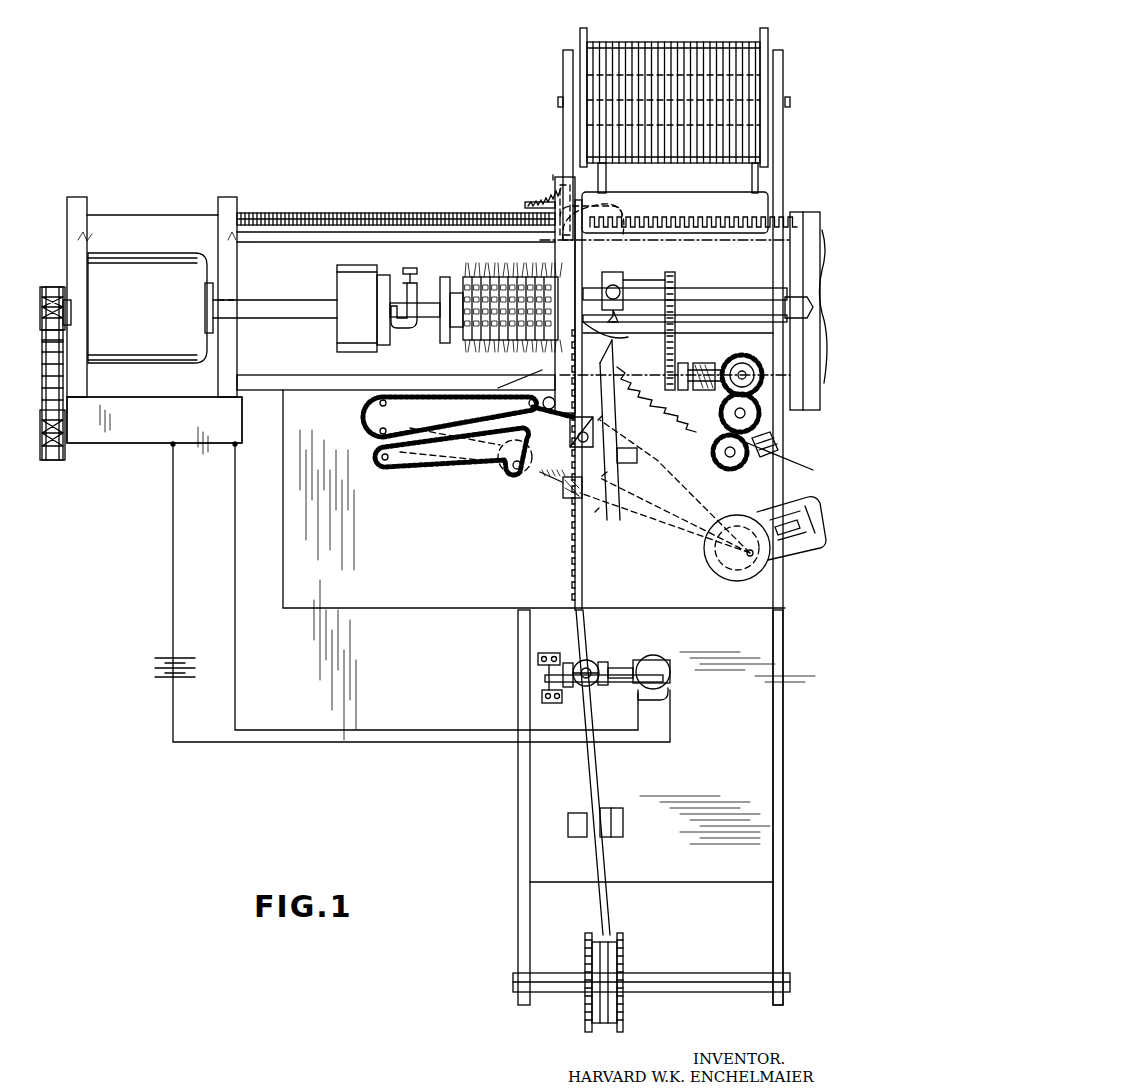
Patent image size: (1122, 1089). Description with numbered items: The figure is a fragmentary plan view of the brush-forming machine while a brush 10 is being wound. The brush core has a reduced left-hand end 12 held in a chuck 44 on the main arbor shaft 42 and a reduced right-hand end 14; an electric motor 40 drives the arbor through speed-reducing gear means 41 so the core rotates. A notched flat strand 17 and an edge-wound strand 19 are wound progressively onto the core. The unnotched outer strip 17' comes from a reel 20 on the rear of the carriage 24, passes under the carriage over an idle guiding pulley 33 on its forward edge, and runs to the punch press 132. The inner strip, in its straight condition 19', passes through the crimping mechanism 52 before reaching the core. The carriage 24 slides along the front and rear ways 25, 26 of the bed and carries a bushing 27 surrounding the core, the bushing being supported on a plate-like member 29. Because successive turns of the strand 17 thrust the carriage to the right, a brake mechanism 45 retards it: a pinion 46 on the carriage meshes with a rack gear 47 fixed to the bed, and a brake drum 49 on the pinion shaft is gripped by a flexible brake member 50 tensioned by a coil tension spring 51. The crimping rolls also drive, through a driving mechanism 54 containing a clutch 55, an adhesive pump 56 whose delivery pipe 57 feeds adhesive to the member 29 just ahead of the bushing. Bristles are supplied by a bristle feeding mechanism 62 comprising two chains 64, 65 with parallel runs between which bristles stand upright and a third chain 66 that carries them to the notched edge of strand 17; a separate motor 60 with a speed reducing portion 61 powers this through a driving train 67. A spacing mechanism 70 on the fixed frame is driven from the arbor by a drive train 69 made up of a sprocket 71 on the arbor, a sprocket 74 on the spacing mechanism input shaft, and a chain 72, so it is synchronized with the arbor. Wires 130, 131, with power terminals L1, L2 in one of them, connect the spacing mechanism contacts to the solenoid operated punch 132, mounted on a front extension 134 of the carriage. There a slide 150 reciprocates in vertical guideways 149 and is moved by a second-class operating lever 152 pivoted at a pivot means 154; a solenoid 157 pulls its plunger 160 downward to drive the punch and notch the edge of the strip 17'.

The reel 20 is at (638, 44).
The carriage 24 is at (688, 192).
The pinion 46 is at (698, 205).
The flexible brake member 50 is at (628, 206).
The brake drum 49 is at (608, 201).
The bushing 27 is at (572, 272).
The coil tension spring 51 is at (531, 181).
The brake mechanism 45 is at (548, 157).
The rear way 26 is at (382, 214).
The rack gear 47 is at (315, 216).
The front way 25 is at (269, 226).
The electric motor 40 is at (110, 362).
The speed-reducing gear means 41 is at (206, 355).
The main arbor shaft 42 is at (262, 320).
The chuck 44 is at (335, 343).
The reduced diameter left-hand end 12 is at (429, 287).
The brush 10 is at (487, 354).
The reduced diameter right-hand end 14 is at (790, 300).
The plate-like member 29 is at (618, 279).
The adhesive pump 56 is at (645, 270).
The driving mechanism 54 is at (682, 275).
The delivery pipe 57 is at (606, 332).
The clutch 55 is at (708, 365).
The edge-wound strand 19 is at (688, 410).
The crimping means 52 is at (755, 465).
The straight inner strip 19' is at (787, 450).
The driving train 67 is at (628, 428).
The first flat strand 17 is at (598, 405).
The third chain 66 is at (533, 488).
The chain 65 is at (441, 407).
The chain 64 is at (420, 460).
The bristle feeding mechanism 62 is at (472, 466).
The speed reducing gearing portion 61 is at (710, 559).
The separate motor 60 is at (809, 566).
The spacing mechanism 70 is at (142, 452).
The drive train 69 is at (42, 370).
The sprocket 71 is at (45, 298).
The chain 72 is at (38, 342).
The sprocket 74 is at (43, 458).
The wire 130 is at (173, 544).
The wire 131 is at (235, 588).
The terminal L1 is at (172, 655).
The terminal L2 is at (172, 677).
The pivot means 154 is at (547, 676).
The vertical guideways 149 is at (604, 662).
The vertically reciprocable slide 150 is at (580, 690).
The second-class operating lever 152 is at (620, 682).
The solenoid operated punch 132 is at (612, 652).
The plunger 160 is at (655, 660).
The solenoid 157 is at (670, 688).
The unnotched outer strip 17' is at (575, 772).
The front extension 134 is at (765, 785).
The idle guiding pulley 33 is at (585, 1017).